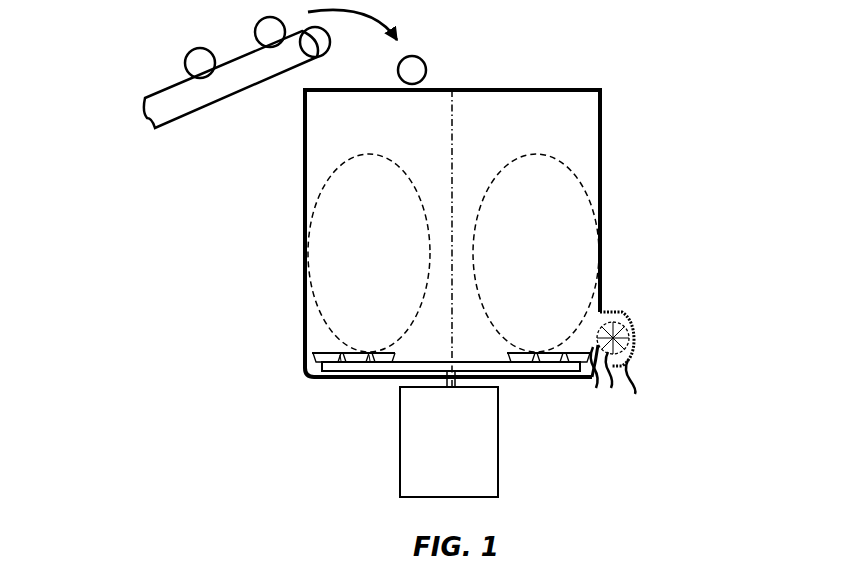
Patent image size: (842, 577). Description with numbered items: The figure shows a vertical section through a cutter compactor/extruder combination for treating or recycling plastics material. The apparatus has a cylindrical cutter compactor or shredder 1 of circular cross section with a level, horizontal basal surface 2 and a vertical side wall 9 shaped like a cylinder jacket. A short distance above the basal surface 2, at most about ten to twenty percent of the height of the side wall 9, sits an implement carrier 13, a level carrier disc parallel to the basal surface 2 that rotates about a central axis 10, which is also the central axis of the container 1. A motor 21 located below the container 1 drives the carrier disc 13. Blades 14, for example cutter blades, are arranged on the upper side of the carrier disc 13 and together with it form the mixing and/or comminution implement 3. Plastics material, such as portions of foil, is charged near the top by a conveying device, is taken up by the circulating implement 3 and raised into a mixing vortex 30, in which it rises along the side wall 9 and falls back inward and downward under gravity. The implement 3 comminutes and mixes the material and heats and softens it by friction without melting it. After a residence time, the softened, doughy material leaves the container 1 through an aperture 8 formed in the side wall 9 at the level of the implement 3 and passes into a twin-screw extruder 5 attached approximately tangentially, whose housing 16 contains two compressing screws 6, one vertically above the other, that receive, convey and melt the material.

The cutter compactor 1 is at (620, 101).
The basal surface 2 is at (356, 379).
The mixing and/or comminution implement 3 is at (407, 359).
The twin-screw extruder 5 is at (614, 306).
The screws 6 is at (602, 383).
The aperture 8 is at (587, 340).
The side wall 9 is at (602, 170).
The central axis of rotation 10 is at (456, 104).
The implement carrier 13 is at (522, 371).
The blades 14 is at (327, 356).
The housing 16 is at (645, 298).
The motor 21 is at (402, 471).
The mixing vortex 30 is at (388, 157).